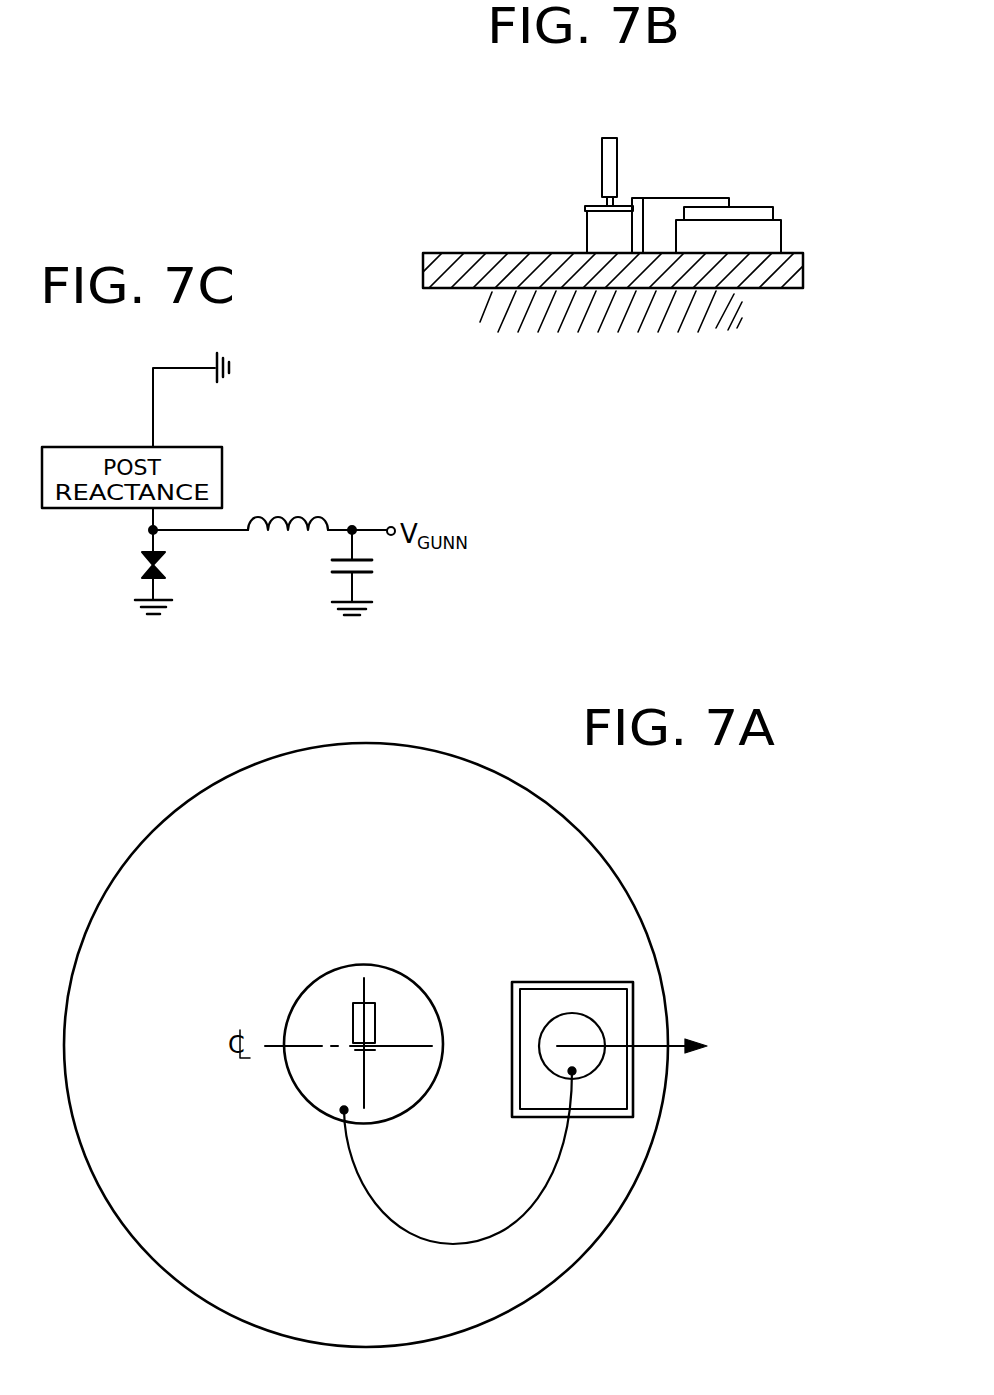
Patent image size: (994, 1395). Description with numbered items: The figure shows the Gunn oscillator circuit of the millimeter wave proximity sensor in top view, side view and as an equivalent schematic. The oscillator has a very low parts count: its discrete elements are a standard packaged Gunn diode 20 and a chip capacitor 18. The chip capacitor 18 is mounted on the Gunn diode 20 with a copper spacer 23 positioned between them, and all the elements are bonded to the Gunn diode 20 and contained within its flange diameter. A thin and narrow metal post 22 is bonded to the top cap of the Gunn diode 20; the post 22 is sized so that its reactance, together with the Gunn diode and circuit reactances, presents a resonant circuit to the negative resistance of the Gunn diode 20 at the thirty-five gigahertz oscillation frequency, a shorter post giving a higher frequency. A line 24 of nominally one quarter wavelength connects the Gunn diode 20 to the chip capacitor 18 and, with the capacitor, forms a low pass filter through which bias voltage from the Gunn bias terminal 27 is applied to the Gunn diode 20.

In FIG. 7B, the chip capacitor 18 is at (768, 207).
In FIG. 7C, the chip capacitor 18 is at (375, 575).
In FIG. 7A, the chip capacitor 18 is at (605, 1118).
In FIG. 7B, the Gunn diode 20 is at (447, 253).
In FIG. 7C, the Gunn diode 20 is at (145, 575).
In FIG. 7A, the Gunn diode 20 is at (598, 850).
In FIG. 7B, the metal post 22 is at (601, 170).
In FIG. 7A, the metal post 22 is at (360, 1052).
In FIG. 7B, the copper spacer 23 is at (782, 235).
In FIG. 7A, the copper spacer 23 is at (605, 980).
In FIG. 7B, the line 24 is at (662, 198).
In FIG. 7C, the line 24 is at (280, 517).
In FIG. 7A, the line 24 is at (533, 1215).
In FIG. 7A, the Gunn bias terminal 27 is at (702, 1070).